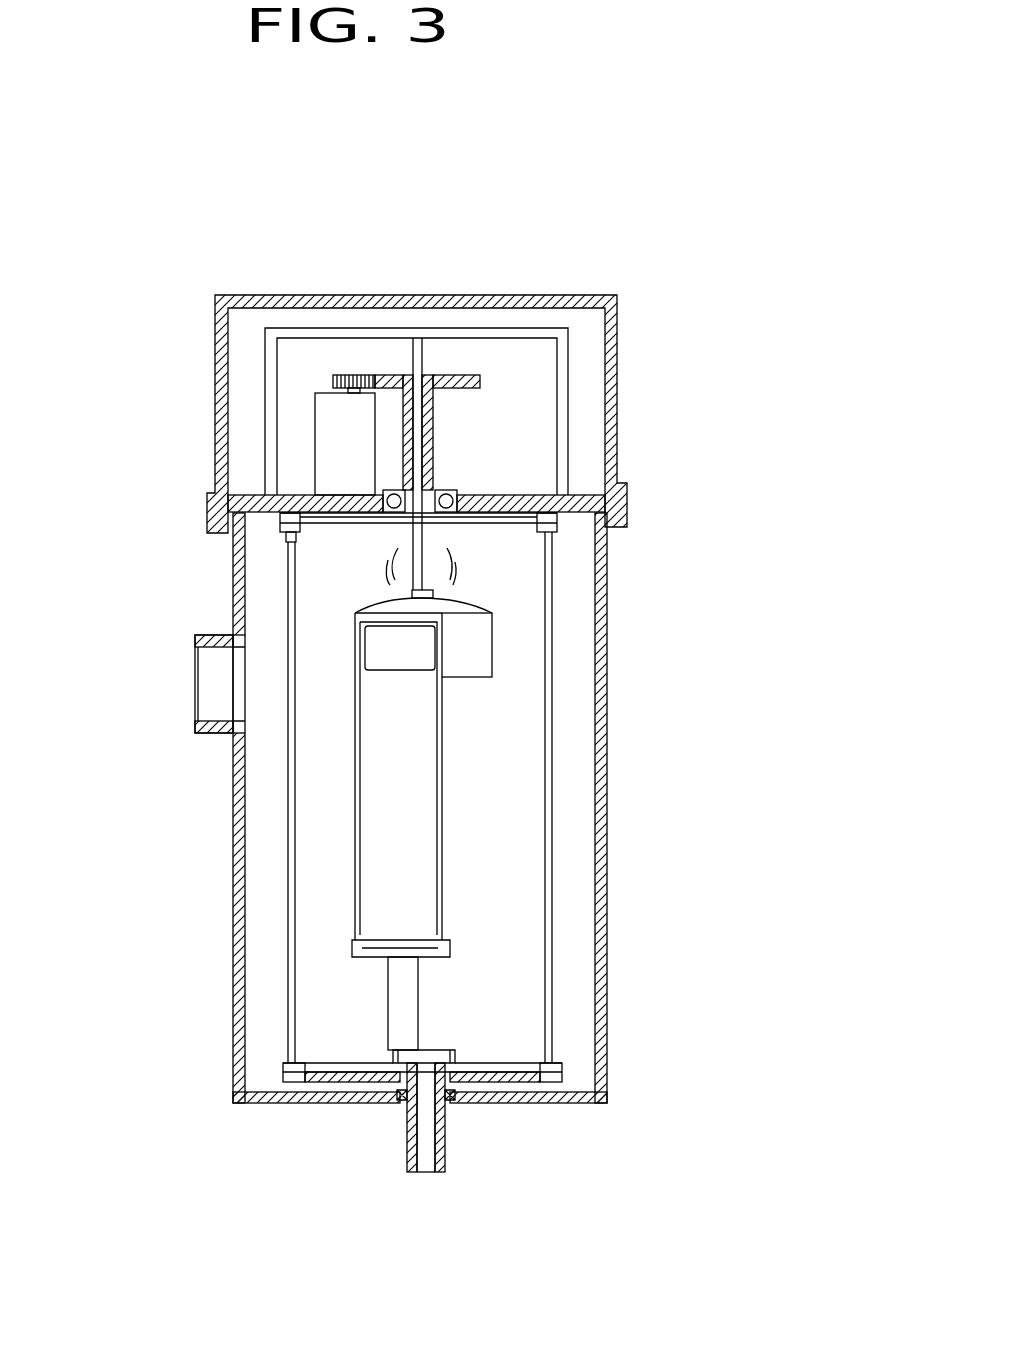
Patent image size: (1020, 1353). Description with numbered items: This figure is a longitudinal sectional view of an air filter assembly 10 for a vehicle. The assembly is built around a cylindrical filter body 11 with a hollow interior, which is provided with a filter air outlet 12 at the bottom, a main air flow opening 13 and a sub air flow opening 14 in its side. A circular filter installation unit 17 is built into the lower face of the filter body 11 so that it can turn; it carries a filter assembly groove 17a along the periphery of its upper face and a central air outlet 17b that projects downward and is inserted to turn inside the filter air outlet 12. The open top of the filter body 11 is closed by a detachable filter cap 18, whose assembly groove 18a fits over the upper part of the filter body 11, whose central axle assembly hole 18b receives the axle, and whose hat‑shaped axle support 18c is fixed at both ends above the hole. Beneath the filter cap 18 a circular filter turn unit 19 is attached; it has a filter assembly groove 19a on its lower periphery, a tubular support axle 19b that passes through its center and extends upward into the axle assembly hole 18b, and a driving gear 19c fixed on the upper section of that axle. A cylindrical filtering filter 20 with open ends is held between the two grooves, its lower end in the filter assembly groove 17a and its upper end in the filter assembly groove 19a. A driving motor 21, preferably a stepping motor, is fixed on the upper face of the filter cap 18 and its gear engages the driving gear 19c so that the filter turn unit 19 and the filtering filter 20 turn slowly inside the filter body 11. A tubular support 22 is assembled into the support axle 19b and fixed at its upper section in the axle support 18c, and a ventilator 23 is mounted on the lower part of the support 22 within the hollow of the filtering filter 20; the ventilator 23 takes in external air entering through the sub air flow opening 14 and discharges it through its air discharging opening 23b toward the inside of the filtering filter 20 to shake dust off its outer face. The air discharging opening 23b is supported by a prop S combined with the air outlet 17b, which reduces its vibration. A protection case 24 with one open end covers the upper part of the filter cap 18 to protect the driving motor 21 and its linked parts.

The air filter assembly 10 is at (118, 208).
The filter body 11 is at (608, 932).
The filter air outlet 12 is at (407, 1148).
The main air flow opening 13 is at (203, 713).
The sub air flow opening 14 is at (370, 610).
The filter installation unit 17 is at (551, 1047).
The filter assembly groove 17a is at (303, 1063).
The air outlet 17b is at (434, 1108).
The filter cap 18 is at (530, 495).
The assembly groove 18a is at (500, 523).
The axle assembly hole 18b is at (450, 492).
The axle support 18c is at (338, 328).
The filter turn unit 19 is at (500, 530).
The filter assembly groove 19a is at (297, 533).
The support axle 19b is at (433, 433).
The driving gear 19c is at (446, 375).
The filtering filter 20 is at (551, 785).
The driving motor 21 is at (323, 432).
The support 22 is at (416, 355).
The ventilator 23 is at (477, 642).
The air discharging opening 23b is at (400, 863).
The protection case 24 is at (270, 295).
The prop S is at (400, 987).